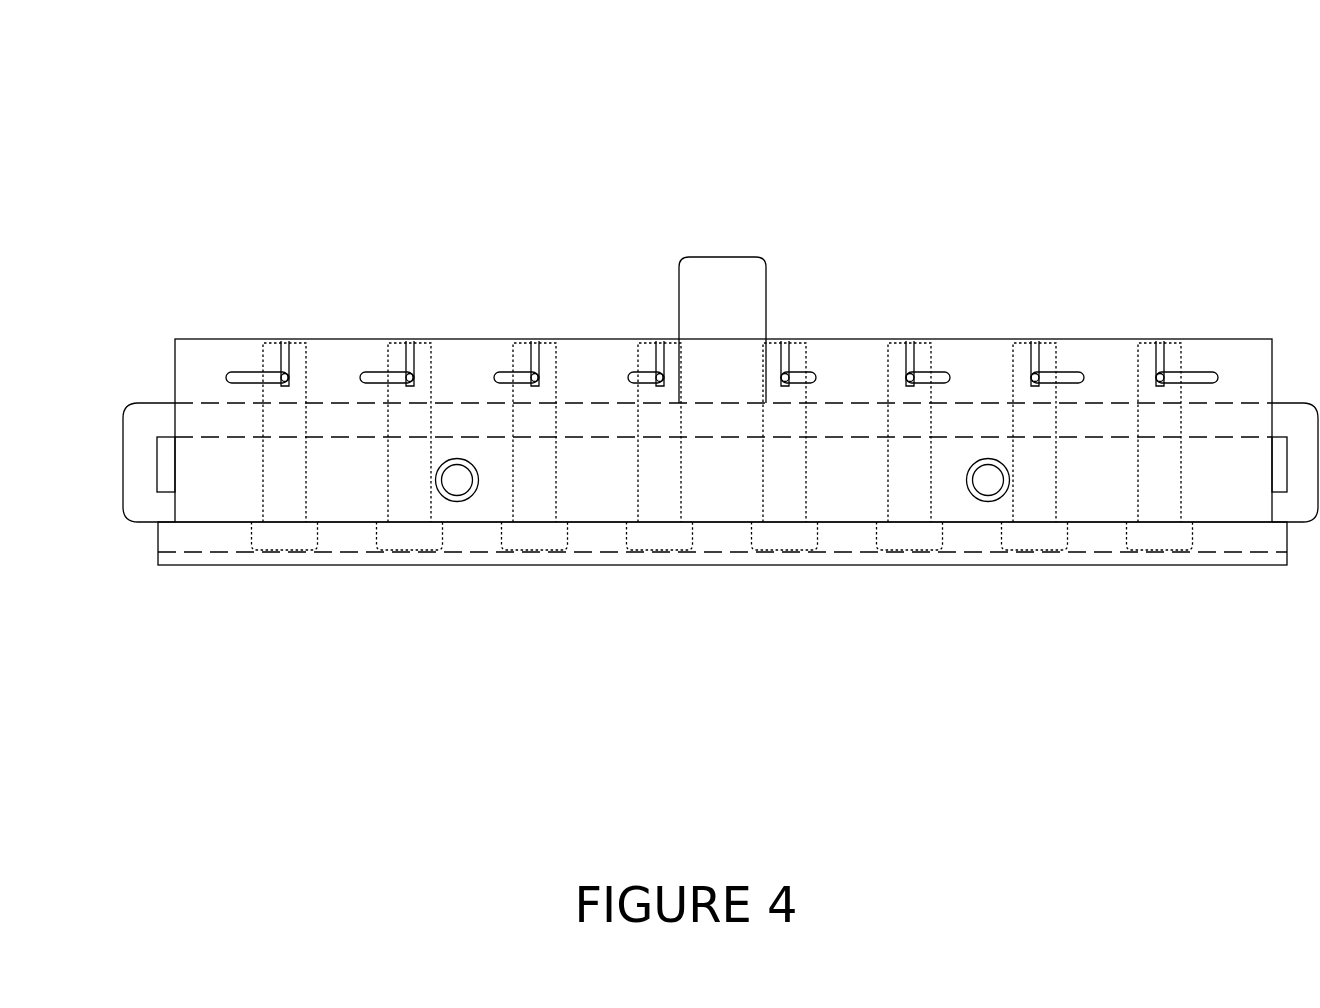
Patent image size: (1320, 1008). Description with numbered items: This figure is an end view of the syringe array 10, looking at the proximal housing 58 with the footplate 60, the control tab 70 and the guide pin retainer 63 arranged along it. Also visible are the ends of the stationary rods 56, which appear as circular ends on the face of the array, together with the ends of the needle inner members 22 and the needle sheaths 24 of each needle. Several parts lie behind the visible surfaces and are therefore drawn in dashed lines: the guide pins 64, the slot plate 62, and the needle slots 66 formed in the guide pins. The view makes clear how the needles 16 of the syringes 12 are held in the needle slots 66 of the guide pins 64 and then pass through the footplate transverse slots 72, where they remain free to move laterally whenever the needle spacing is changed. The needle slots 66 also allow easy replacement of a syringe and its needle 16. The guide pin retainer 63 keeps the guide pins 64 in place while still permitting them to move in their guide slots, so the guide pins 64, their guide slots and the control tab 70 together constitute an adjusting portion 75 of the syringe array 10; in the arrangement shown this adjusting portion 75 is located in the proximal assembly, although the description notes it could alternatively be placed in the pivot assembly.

The syringe array 10 is at (685, 276).
The syringes 12 is at (652, 368).
The needles 16 is at (532, 368).
The needle inner members 22 is at (400, 378).
The needle sheaths 24 is at (413, 378).
The stationary rods 56 is at (992, 502).
The proximal housing 58 is at (137, 502).
The footplate 60 is at (344, 352).
The slot plate 62 is at (235, 515).
The guide pin retainer 63 is at (1138, 562).
The guide pins 64 is at (290, 490).
The needle slots 66 is at (278, 340).
The control tab 70 is at (738, 313).
The footplate transverse slots 72 is at (809, 362).
The adjusting portion 75 is at (789, 278).